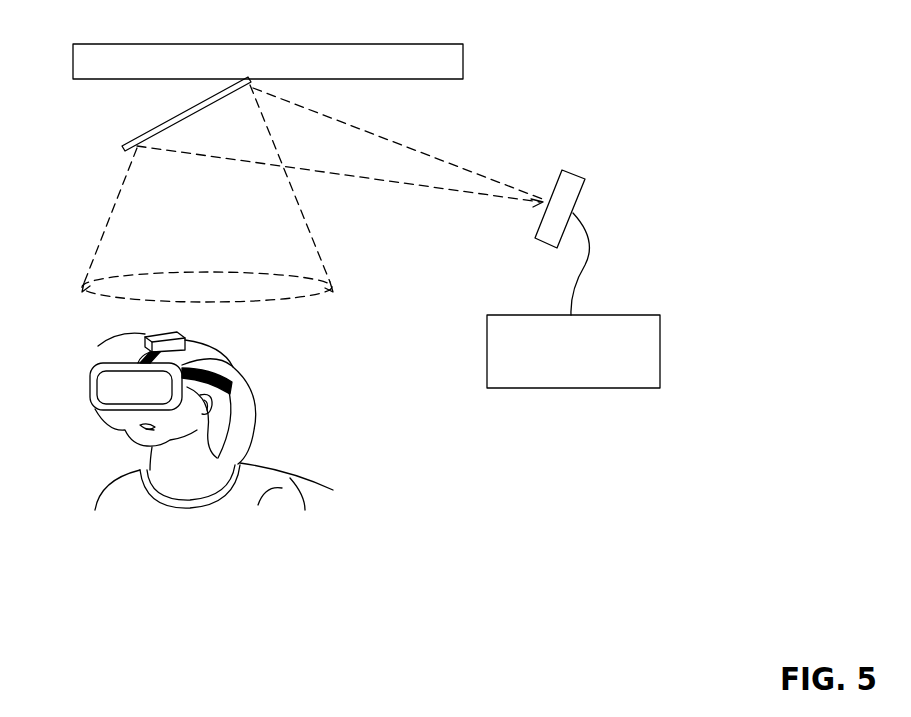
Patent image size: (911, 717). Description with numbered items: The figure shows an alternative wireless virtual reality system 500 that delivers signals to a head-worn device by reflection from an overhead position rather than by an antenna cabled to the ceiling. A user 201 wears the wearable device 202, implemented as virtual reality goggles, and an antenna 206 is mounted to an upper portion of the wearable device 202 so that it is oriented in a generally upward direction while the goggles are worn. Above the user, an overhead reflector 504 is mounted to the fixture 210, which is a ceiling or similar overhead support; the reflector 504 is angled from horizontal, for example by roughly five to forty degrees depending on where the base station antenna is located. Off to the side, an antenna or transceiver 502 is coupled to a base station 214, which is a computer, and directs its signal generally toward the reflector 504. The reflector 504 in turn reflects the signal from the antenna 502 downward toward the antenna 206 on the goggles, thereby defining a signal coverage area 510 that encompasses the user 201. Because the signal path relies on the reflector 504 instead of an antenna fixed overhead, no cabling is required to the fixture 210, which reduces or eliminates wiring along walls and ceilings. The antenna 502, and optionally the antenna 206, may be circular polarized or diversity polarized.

The wireless virtual reality system 500 is at (600, 37).
The overhead fixture 210 is at (223, 62).
The overhead reflector 504 is at (128, 137).
The signal coverage area 510 is at (110, 250).
The antenna or transceiver 502 is at (576, 178).
The base station 214 is at (532, 389).
The user 201 is at (320, 480).
The wearable device 202 is at (252, 343).
The antenna 206 is at (143, 336).